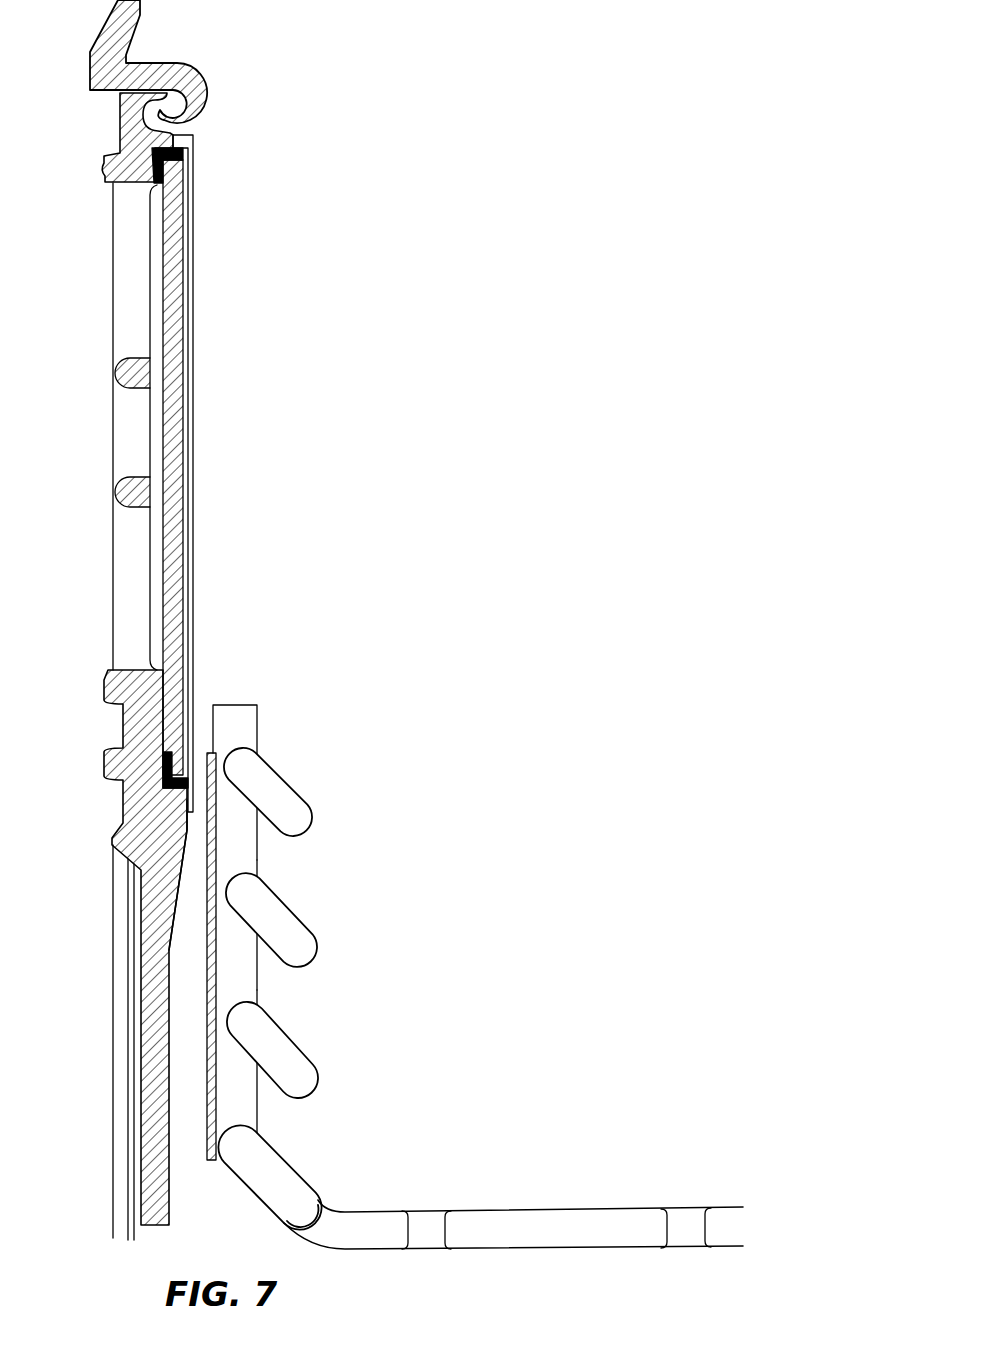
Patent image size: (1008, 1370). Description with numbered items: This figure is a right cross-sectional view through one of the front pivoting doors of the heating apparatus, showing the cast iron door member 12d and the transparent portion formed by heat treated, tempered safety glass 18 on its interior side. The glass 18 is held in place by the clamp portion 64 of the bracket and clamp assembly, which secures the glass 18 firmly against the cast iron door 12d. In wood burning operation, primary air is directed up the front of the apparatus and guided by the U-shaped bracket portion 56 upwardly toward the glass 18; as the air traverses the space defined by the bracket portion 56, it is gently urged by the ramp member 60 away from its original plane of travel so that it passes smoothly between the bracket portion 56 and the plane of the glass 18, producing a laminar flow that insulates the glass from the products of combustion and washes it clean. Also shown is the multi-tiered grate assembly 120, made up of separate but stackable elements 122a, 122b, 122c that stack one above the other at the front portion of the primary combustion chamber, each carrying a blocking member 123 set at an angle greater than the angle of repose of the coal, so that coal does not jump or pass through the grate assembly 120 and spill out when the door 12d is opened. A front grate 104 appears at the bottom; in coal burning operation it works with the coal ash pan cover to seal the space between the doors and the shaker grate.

The door 12d is at (110, 1121).
The safety glass 18 is at (181, 344).
The U-shaped bracket portion 56 is at (210, 1108).
The ramp member 60 is at (178, 872).
The clamp portion 64 is at (195, 203).
The front grate 104 is at (282, 1182).
The multi-tiered grate assembly 120 is at (302, 919).
The stackable element 122a is at (240, 718).
The stackable element 122b is at (253, 872).
The stackable element 122c is at (262, 998).
The blocking member 123 is at (304, 821).